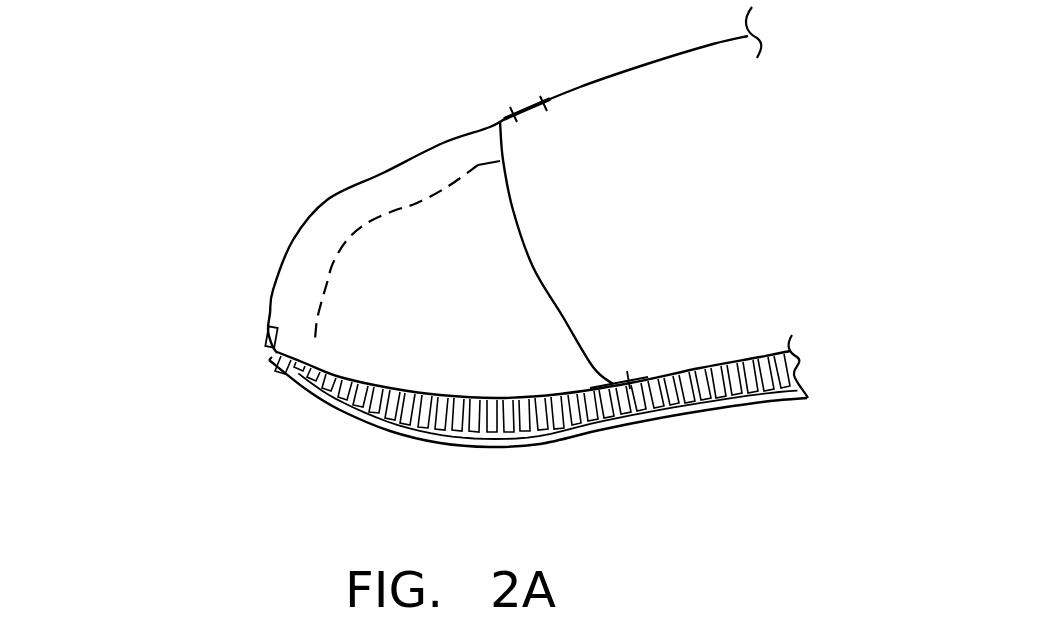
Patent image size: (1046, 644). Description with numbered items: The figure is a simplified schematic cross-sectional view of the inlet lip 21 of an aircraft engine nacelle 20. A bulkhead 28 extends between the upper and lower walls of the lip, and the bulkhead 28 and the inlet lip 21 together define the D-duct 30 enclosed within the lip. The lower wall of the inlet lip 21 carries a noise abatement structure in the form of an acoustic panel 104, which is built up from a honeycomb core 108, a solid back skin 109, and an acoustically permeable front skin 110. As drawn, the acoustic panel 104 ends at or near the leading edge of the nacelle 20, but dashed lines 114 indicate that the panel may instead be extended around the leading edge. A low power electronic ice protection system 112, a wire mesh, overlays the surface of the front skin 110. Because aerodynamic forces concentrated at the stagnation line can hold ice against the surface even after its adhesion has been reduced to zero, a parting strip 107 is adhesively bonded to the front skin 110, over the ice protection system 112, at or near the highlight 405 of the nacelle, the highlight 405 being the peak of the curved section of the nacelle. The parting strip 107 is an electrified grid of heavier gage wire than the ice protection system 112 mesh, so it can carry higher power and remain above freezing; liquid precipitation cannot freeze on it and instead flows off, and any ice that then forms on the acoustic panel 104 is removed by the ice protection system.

The aircraft engine nacelle 20 is at (294, 148).
The inlet lip 21 is at (610, 460).
The bulkhead 28 is at (540, 273).
The D-duct 30 is at (478, 291).
The acoustic panel 104 is at (363, 395).
The parting strip 107 is at (265, 340).
The honeycomb core 108 is at (480, 430).
The solid back skin 109 is at (432, 402).
The acoustically permeable front skin 110 is at (268, 354).
The low power electronic ice protection system 112 is at (340, 424).
The dashed lines 114 is at (388, 213).
The highlight 405 is at (272, 308).